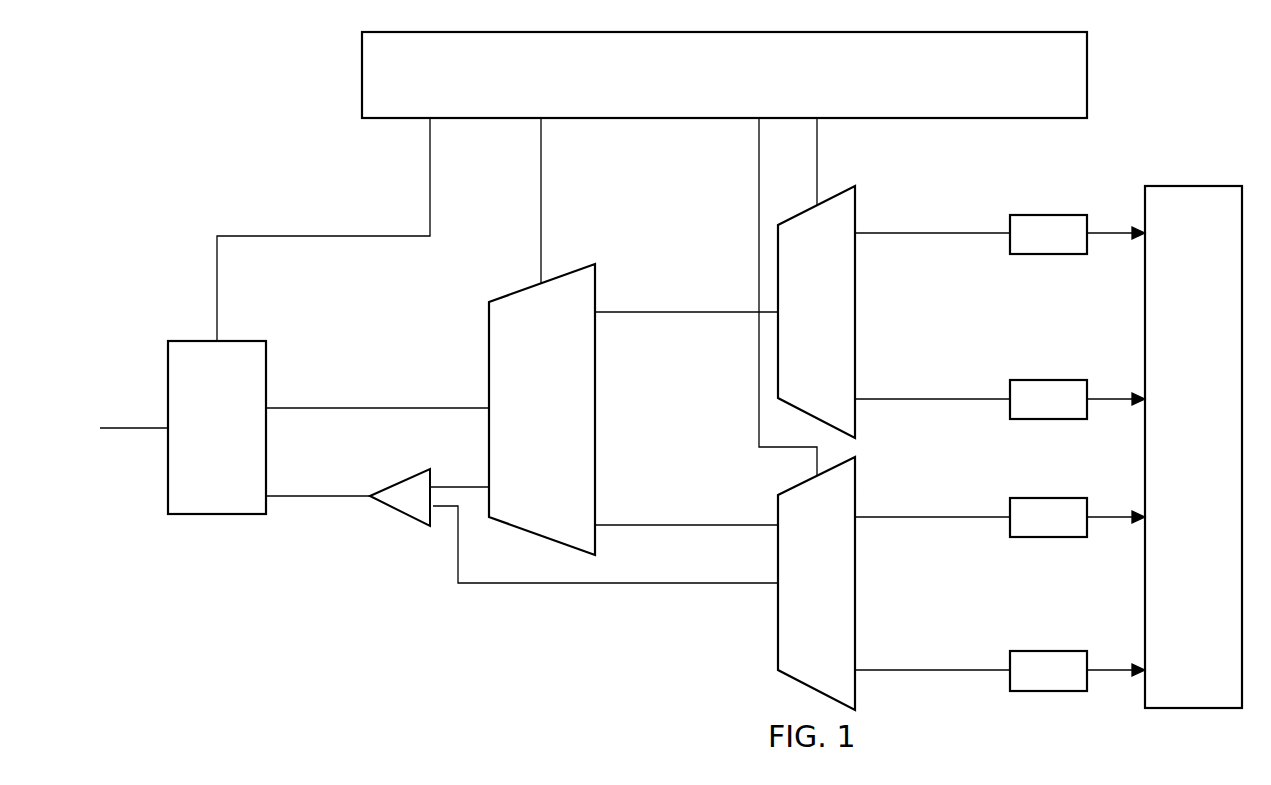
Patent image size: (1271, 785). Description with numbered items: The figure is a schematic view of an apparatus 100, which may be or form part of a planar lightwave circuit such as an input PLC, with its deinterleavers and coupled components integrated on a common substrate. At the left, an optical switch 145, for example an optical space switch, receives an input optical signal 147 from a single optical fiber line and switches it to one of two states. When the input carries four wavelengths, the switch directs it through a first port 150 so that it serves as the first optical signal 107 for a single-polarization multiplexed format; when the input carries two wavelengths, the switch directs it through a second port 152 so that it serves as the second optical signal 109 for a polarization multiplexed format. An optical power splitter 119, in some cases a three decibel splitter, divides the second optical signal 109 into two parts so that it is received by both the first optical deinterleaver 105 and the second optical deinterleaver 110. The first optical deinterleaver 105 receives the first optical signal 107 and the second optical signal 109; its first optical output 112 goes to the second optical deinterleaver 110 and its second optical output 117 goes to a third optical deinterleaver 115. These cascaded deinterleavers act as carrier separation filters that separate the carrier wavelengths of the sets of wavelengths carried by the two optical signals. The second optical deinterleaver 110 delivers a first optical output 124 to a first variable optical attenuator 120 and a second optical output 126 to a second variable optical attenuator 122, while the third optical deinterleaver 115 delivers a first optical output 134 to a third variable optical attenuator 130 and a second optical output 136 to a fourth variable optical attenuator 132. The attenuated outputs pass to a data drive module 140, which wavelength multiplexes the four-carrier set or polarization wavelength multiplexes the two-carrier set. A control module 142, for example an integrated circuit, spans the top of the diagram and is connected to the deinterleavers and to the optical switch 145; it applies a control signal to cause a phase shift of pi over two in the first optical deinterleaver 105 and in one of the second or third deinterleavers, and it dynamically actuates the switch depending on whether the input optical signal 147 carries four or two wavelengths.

The apparatus 100 is at (237, 101).
The control module 142 is at (721, 103).
The optical switch 145 is at (200, 481).
The input optical signal 147 is at (130, 432).
The first port 150 is at (274, 405).
The second port 152 is at (270, 500).
The first optical signal 107 is at (420, 412).
The second optical signal 109 is at (353, 500).
The optical power splitter 119 is at (402, 518).
The first optical deinterleaver 105 is at (539, 438).
The second optical output of the first optical deinterleaver 117 is at (686, 315).
The first optical output of the first optical deinterleaver 112 is at (765, 524).
The third optical deinterleaver 115 is at (798, 341).
The second optical deinterleaver 110 is at (798, 612).
The second optical output of the third optical deinterleaver 136 is at (937, 237).
The fourth variable optical attenuator 132 is at (1048, 215).
The first optical output of the third optical deinterleaver 134 is at (937, 403).
The third variable optical attenuator 130 is at (1048, 380).
The second optical output of the second optical deinterleaver 126 is at (937, 521).
The second variable optical attenuator 122 is at (1048, 498).
The first optical output of the second optical deinterleaver 124 is at (937, 674).
The first variable optical attenuator 120 is at (1048, 651).
The data drive module 140 is at (1176, 501).